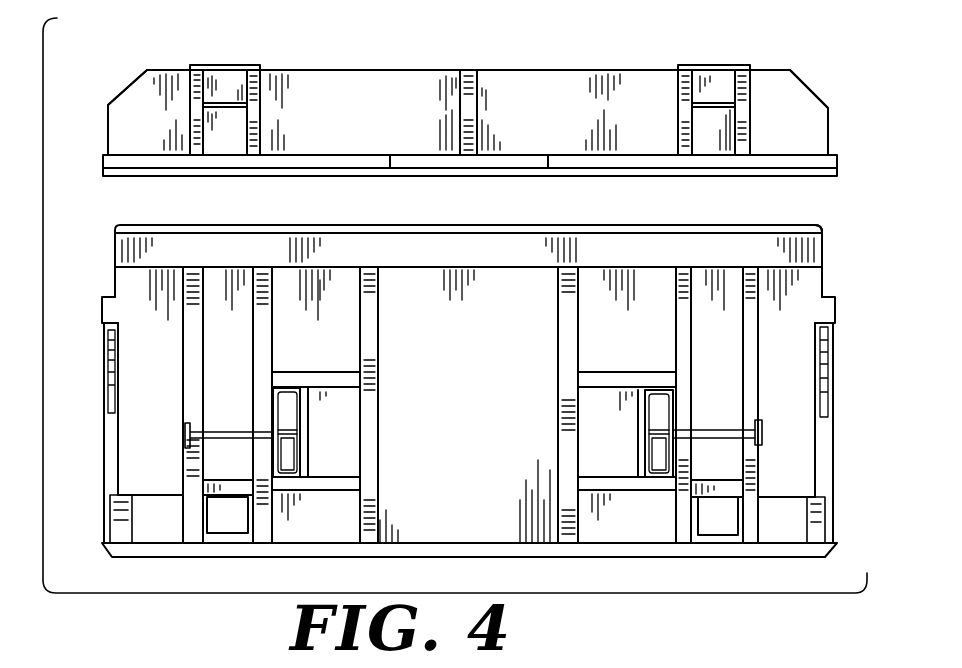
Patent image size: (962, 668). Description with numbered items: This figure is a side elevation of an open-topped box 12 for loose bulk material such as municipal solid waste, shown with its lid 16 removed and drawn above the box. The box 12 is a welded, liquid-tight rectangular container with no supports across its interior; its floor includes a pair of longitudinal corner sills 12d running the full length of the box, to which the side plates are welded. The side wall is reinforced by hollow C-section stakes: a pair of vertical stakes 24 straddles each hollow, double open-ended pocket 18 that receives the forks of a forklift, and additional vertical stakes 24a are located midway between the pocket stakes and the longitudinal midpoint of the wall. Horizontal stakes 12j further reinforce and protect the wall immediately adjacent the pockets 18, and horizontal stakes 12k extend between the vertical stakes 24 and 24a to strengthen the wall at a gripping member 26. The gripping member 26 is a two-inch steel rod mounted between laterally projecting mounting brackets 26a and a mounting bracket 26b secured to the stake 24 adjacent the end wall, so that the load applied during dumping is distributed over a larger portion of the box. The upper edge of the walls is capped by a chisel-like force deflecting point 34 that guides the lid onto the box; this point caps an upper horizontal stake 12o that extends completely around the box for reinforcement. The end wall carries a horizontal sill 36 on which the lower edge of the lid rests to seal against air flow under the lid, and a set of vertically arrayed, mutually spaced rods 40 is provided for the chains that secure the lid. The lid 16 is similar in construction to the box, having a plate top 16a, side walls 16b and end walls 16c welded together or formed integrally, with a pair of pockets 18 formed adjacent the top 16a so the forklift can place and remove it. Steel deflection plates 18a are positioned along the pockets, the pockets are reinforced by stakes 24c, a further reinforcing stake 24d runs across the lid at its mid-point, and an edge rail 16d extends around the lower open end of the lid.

The box 12 is at (842, 267).
The corner sill 12d is at (327, 550).
The horizontal stake 12j is at (713, 480).
The horizontal stake 12k is at (313, 377).
The upper horizontal stake 12o is at (822, 240).
The lid 16 is at (807, 77).
The plate top 16a is at (613, 68).
The side wall of lid 16b is at (366, 131).
The end wall of lid 16c is at (108, 124).
The edge rail 16d is at (690, 177).
The pocket 18 is at (228, 518).
The deflection plate 18a is at (225, 82).
The stake 24 is at (260, 333).
The stake 24a is at (382, 407).
The stake 24c is at (193, 93).
The reinforcing stake 24d is at (462, 97).
The gripping member 26 is at (290, 423).
The mounting bracket 26a is at (290, 458).
The mounting bracket 26b is at (185, 435).
The force deflecting point 34 is at (308, 228).
The sill 36 is at (100, 302).
The rod 40 is at (107, 392).